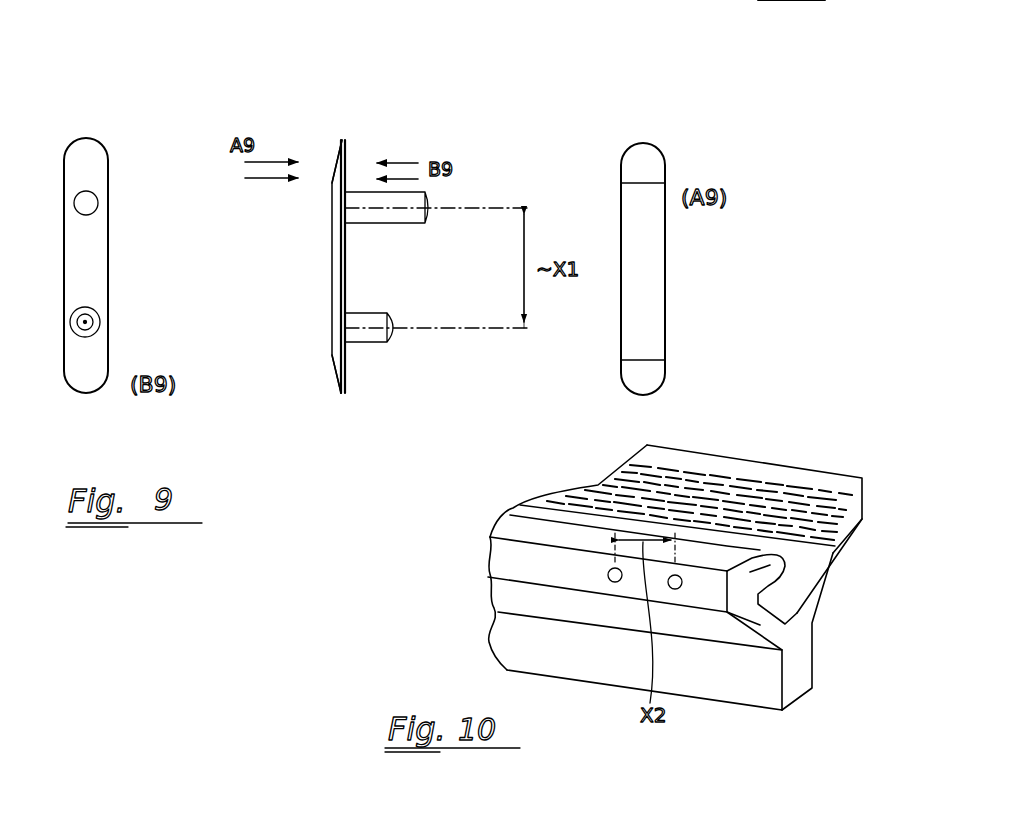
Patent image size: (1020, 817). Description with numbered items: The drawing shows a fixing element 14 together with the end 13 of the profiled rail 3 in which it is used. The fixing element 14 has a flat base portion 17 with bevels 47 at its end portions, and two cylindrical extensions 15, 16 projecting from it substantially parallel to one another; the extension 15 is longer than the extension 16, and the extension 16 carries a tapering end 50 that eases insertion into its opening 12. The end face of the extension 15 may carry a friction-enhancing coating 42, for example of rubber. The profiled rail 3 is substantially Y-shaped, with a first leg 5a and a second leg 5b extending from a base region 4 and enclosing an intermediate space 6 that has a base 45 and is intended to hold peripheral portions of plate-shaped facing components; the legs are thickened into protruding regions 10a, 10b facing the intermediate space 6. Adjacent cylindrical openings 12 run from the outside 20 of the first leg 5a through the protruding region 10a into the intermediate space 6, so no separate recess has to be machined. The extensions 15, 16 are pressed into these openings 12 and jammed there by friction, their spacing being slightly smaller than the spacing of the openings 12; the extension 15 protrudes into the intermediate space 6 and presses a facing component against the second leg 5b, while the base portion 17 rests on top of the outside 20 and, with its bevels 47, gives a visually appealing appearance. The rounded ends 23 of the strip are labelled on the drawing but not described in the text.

In FIG. 10, the profiled rail 3 is at (840, 466).
In FIG. 10, the base region 4 is at (793, 690).
In FIG. 10, the first leg 5a is at (766, 628).
In FIG. 10, the second leg 5b is at (813, 572).
In FIG. 10, the intermediate space 6 is at (735, 530).
In FIG. 10, the protruding region 10a is at (727, 570).
In FIG. 10, the protruding region 10b is at (822, 527).
In FIG. 10, the openings 12 is at (615, 582).
In FIG. 10, the end 13 is at (771, 730).
In FIG. 9, the fixing element 14 is at (147, 133).
In FIG. 9, the extension 15 is at (90, 204).
In FIG. 9, the extension 16 is at (101, 318).
In FIG. 9, the base portion 17 is at (93, 275).
In FIG. 10, the outside 20 is at (503, 553).
In FIG. 9, the rounded end 23 is at (78, 136).
In FIG. 9, the friction-enhancing coating 42 is at (428, 207).
In FIG. 10, the base 45 is at (798, 615).
In FIG. 9, the bevels 47 is at (334, 157).
In FIG. 9, the tapering end 50 is at (401, 315).